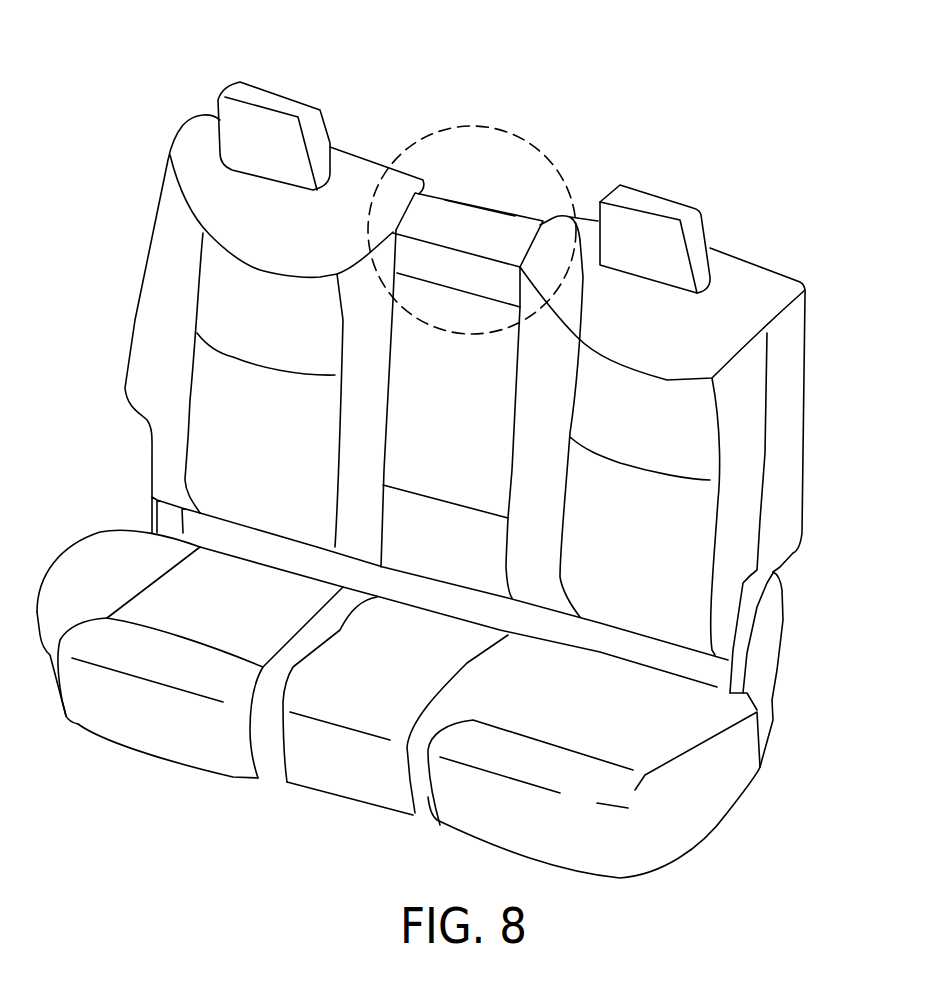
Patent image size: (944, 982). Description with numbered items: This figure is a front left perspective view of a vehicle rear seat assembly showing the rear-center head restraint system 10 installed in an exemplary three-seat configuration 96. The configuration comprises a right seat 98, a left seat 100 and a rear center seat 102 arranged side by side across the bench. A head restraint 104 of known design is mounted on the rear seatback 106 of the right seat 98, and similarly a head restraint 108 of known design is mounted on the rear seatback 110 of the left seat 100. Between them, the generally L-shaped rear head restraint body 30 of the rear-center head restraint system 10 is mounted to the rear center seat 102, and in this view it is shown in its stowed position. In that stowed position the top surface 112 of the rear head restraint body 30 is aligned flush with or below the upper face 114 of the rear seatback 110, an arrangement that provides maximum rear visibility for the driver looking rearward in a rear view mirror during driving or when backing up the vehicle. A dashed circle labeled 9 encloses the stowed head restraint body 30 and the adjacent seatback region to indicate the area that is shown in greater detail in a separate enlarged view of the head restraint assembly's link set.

The rear-center head restraint system 10 is at (723, 78).
The detail area of FIG. 9 is at (556, 157).
The rear head restraint body 30 is at (447, 210).
The three-seat configuration 96 is at (826, 290).
The right seat 98 is at (223, 307).
The left seat 100 is at (692, 422).
The rear center seat 102 is at (463, 308).
The head restraint 104 is at (265, 93).
The rear seatback 106 is at (183, 145).
The head restraint 108 is at (658, 202).
The rear seatback 110 is at (730, 277).
The top surface 112 is at (483, 193).
The upper face 114 is at (592, 203).